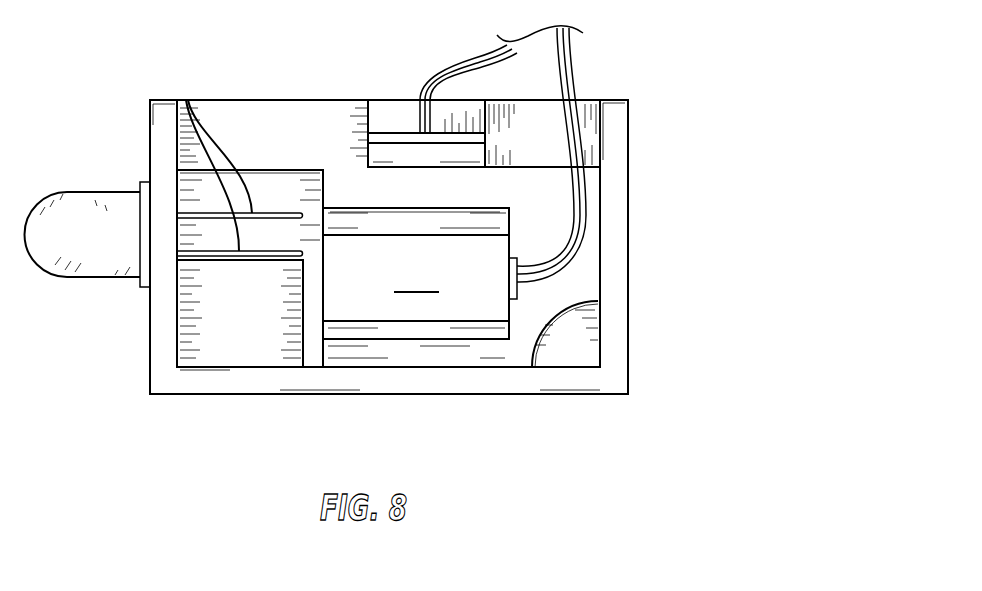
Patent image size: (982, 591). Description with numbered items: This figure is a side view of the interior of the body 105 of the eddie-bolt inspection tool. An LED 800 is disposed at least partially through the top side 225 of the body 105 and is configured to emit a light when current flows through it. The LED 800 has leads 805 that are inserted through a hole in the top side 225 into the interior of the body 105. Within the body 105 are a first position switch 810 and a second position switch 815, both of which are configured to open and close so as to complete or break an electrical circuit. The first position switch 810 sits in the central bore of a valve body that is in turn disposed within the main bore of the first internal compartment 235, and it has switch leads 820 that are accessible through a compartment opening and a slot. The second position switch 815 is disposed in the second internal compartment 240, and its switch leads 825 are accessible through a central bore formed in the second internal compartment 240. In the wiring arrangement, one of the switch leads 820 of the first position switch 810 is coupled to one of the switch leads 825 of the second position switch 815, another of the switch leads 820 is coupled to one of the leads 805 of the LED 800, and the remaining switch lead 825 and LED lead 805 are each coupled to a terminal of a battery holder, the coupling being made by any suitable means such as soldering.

The body 105 is at (218, 424).
The top side 225 is at (152, 318).
The first internal compartment 235 is at (287, 110).
The second internal compartment 240 is at (420, 283).
The LED 800 is at (97, 192).
The leads 805 is at (188, 100).
The first position switch 810 is at (400, 133).
The second position switch 815 is at (517, 292).
The switch leads 820 is at (502, 53).
The switch leads 825 is at (570, 50).